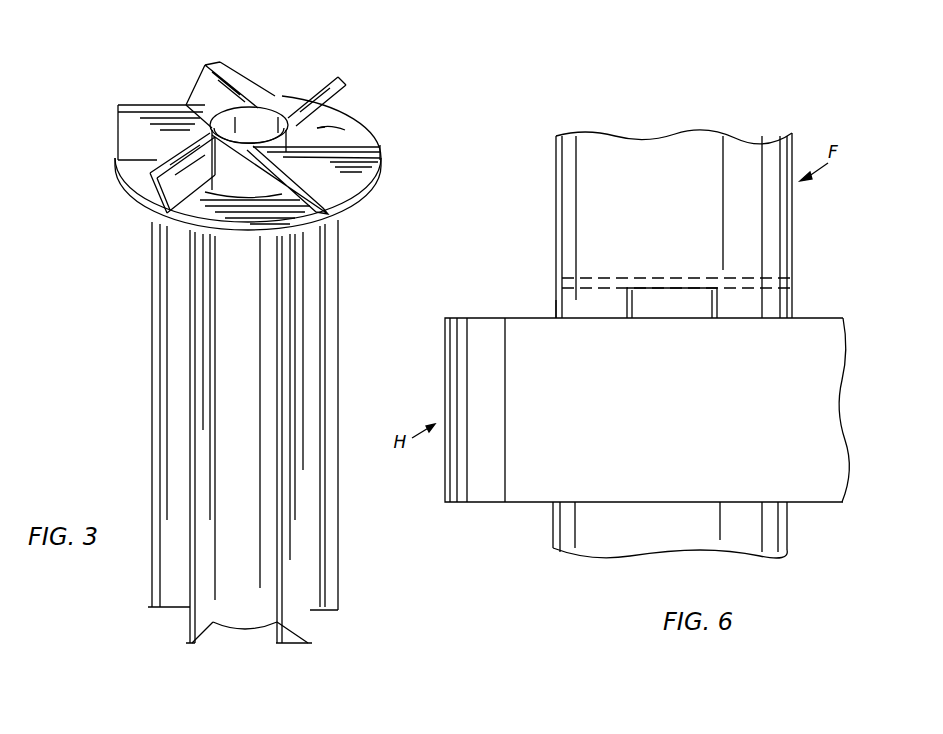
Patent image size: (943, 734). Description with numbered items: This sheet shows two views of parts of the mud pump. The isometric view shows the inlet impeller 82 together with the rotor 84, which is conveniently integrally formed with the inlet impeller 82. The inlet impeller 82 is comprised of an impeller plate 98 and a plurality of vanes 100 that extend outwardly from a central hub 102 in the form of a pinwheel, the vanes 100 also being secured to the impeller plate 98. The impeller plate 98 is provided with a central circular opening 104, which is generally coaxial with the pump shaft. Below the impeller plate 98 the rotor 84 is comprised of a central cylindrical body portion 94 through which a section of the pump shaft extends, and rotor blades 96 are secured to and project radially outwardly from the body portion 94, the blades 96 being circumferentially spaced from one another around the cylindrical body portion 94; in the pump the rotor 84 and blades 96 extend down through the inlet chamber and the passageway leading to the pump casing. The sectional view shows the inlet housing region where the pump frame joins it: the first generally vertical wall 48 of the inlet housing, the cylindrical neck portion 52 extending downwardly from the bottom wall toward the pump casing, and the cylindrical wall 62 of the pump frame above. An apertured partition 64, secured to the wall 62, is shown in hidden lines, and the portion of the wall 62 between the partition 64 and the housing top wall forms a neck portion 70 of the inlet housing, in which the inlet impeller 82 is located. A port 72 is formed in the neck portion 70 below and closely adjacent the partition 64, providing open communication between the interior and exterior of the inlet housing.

In FIG. 6, the first generally vertical wall 48 is at (647, 420).
In FIG. 6, the cylindrical neck portion 52 is at (553, 530).
In FIG. 6, the cylindrical wall 62 is at (620, 148).
In FIG. 6, the apertured partition 64 is at (757, 277).
In FIG. 6, the neck portion 70 is at (558, 300).
In FIG. 6, the port 72 is at (704, 305).
In FIG. 3, the inlet impeller 82 is at (259, 126).
In FIG. 3, the rotor 84 is at (231, 446).
In FIG. 3, the central cylindrical body portion 94 is at (249, 612).
In FIG. 3, the rotor blades 96 is at (328, 258).
In FIG. 3, the impeller plate 98 is at (138, 183).
In FIG. 3, the vanes 100 is at (208, 62).
In FIG. 3, the central hub 102 is at (287, 113).
In FIG. 3, the central circular opening 104 is at (317, 128).